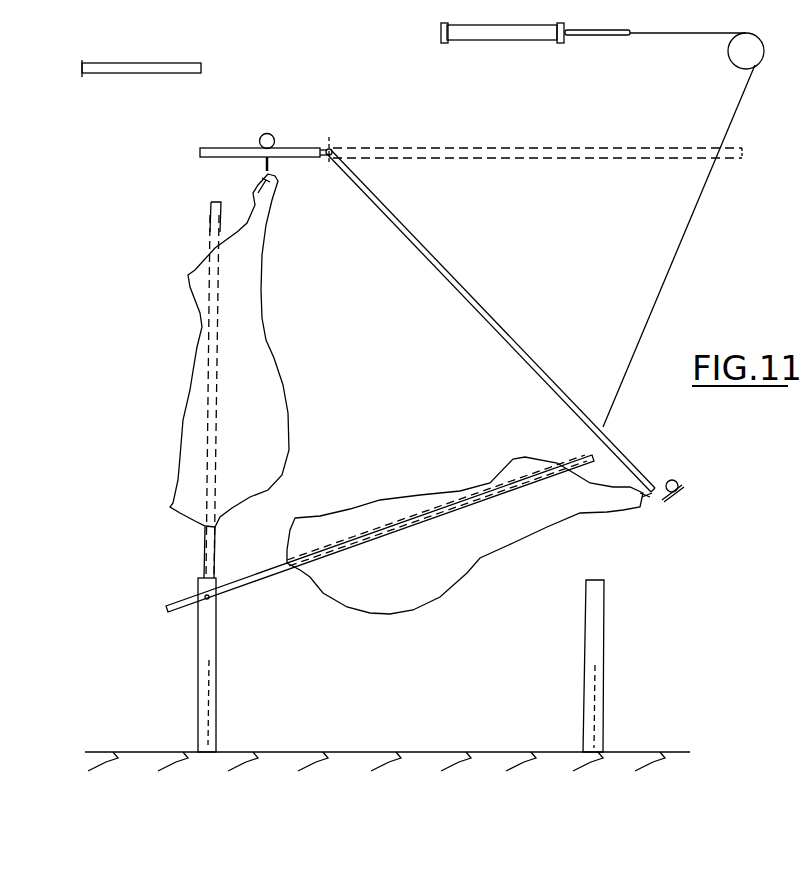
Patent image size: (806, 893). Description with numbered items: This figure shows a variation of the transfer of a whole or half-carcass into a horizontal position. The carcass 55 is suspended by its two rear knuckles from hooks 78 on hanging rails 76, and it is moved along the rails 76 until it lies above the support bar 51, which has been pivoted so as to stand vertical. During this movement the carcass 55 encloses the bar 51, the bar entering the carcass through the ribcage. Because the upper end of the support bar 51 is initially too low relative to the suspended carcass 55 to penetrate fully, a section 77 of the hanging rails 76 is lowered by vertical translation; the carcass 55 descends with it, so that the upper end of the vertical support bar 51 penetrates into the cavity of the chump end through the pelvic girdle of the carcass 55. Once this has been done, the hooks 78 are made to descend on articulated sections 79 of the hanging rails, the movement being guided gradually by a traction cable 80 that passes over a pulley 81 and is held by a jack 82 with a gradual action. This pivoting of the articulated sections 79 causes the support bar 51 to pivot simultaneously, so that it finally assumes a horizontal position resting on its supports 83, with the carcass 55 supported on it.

The support bar 51 is at (212, 306).
The carcass 55 is at (274, 341).
The hanging rails 76 is at (134, 66).
The section of the hanging rails 77 is at (292, 152).
The hooks 78 is at (270, 162).
The articulated sections 79 is at (492, 156).
The traction cable 80 is at (686, 227).
The pulley 81 is at (743, 50).
The jack 82 is at (514, 31).
The supports 83 is at (208, 658).